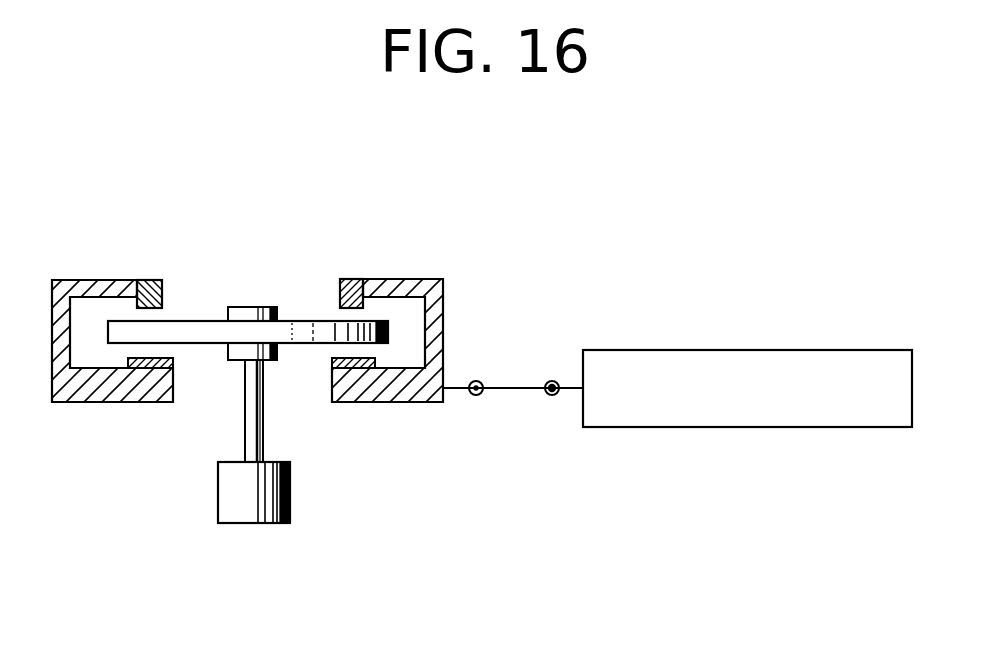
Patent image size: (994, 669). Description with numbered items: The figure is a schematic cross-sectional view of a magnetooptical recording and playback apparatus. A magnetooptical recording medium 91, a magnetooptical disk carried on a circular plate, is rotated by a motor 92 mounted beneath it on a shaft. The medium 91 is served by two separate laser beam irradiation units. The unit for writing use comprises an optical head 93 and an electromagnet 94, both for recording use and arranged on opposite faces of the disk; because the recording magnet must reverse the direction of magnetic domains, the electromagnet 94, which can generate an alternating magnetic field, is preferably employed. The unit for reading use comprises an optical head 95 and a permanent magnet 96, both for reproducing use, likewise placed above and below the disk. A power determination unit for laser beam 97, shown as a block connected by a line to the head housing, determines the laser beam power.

The magnetooptical recording medium 91 is at (299, 321).
The motor 92 is at (227, 505).
The optical head for recording use 93 is at (170, 356).
The electromagnet for recording use 94 is at (162, 292).
The optical head for reproducing use 95 is at (334, 369).
The permanent magnet for reproducing use 96 is at (347, 287).
The power determination unit for laser beam 97 is at (612, 350).